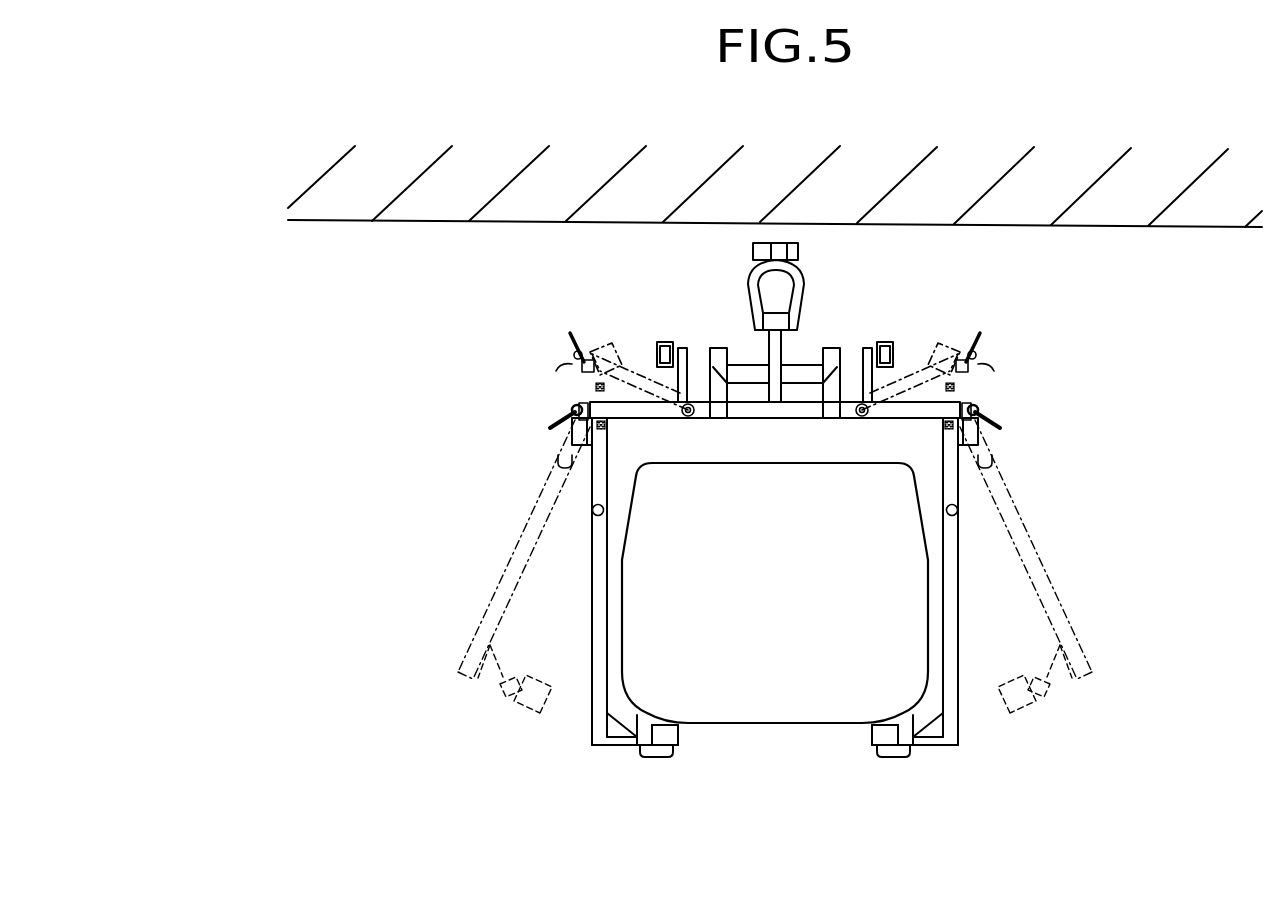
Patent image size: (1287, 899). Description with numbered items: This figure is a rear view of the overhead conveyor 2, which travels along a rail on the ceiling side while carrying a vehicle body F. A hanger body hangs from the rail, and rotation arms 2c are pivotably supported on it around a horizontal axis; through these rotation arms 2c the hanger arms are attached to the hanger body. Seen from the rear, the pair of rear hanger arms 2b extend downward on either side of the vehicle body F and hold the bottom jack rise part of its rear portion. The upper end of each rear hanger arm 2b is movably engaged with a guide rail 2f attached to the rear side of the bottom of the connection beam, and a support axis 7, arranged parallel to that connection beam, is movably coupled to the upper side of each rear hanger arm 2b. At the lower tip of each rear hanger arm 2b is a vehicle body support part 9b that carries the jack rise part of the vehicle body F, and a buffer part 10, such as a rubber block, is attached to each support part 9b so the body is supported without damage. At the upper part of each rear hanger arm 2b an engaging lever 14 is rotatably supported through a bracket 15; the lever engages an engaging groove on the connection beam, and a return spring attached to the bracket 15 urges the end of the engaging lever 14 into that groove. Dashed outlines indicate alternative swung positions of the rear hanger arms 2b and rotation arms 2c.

The overhead conveyor 2 is at (803, 355).
The rotation arm 2c is at (640, 389).
The rear hanger arm 2b is at (598, 675).
The guide rail 2f is at (607, 428).
The support axis 7 is at (592, 508).
The vehicle body support part 9b is at (487, 695).
The buffer part 10 is at (523, 703).
The engaging lever 14 is at (560, 367).
The bracket 15 is at (568, 432).
The vehicle body F is at (775, 593).